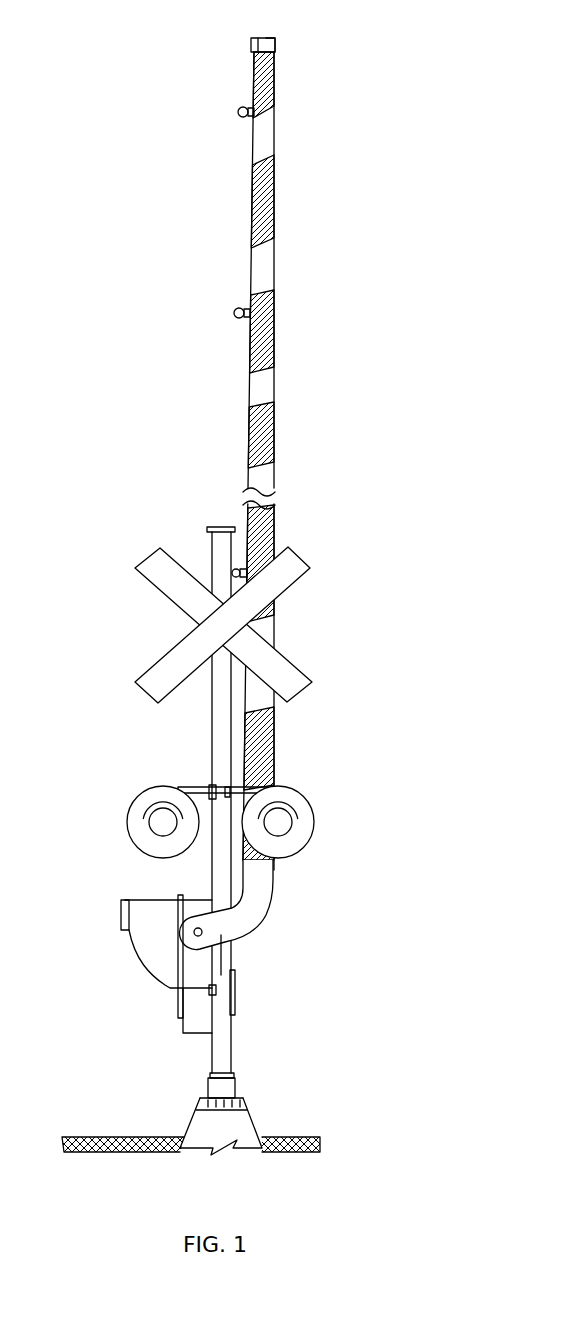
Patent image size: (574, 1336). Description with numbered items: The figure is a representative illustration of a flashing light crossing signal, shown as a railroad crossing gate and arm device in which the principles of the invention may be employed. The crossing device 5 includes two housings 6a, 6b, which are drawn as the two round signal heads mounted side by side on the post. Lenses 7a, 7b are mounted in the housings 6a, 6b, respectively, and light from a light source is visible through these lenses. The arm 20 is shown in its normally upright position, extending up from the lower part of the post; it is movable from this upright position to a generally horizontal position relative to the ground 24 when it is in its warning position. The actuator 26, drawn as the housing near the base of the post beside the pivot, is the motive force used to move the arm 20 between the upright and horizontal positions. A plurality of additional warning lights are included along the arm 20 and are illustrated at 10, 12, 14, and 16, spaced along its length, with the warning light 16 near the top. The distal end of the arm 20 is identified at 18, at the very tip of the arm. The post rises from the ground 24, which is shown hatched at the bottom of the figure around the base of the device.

The crossing device 5 is at (381, 196).
The housing 6a is at (316, 823).
The housing 6b is at (132, 800).
The lens 7a is at (280, 827).
The lens 7b is at (157, 828).
The warning light 10 is at (232, 572).
The warning light 12 is at (234, 313).
The warning light 14 is at (238, 112).
The warning light 16 is at (250, 45).
The distal end of arm 18 is at (276, 43).
The arm 20 is at (274, 383).
The ground 24 is at (295, 1137).
The actuator 26 is at (124, 915).